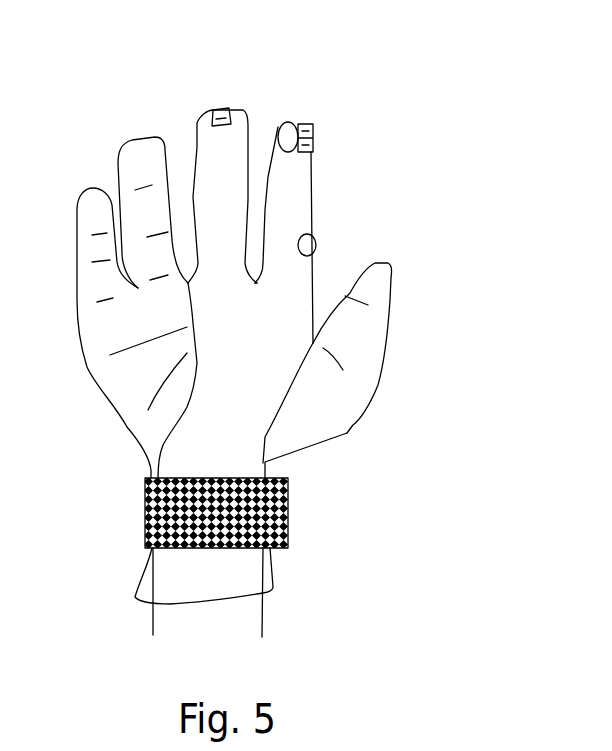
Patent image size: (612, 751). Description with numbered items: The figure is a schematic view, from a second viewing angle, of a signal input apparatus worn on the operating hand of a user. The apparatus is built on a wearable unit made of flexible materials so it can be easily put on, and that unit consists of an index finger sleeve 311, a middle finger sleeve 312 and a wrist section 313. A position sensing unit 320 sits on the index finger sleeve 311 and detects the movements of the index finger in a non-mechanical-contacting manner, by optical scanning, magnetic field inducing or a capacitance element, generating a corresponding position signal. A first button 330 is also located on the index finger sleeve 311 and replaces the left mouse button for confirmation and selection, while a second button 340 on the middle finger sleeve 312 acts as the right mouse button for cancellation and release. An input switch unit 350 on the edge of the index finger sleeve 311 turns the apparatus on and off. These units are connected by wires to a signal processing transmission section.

The index finger sleeve 311 is at (215, 157).
The middle finger sleeve 312 is at (288, 210).
The wrist section 313 is at (238, 472).
The position sensing unit 320 is at (315, 127).
The first button 330 is at (315, 147).
The second button 340 is at (213, 117).
The input switch unit 350 is at (318, 242).